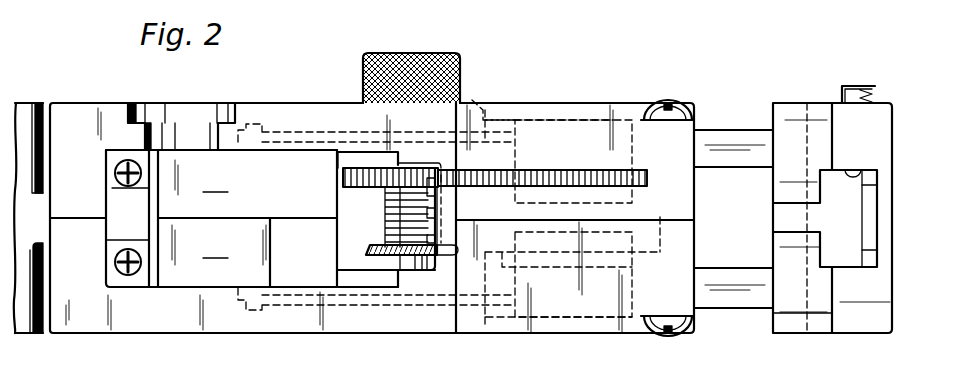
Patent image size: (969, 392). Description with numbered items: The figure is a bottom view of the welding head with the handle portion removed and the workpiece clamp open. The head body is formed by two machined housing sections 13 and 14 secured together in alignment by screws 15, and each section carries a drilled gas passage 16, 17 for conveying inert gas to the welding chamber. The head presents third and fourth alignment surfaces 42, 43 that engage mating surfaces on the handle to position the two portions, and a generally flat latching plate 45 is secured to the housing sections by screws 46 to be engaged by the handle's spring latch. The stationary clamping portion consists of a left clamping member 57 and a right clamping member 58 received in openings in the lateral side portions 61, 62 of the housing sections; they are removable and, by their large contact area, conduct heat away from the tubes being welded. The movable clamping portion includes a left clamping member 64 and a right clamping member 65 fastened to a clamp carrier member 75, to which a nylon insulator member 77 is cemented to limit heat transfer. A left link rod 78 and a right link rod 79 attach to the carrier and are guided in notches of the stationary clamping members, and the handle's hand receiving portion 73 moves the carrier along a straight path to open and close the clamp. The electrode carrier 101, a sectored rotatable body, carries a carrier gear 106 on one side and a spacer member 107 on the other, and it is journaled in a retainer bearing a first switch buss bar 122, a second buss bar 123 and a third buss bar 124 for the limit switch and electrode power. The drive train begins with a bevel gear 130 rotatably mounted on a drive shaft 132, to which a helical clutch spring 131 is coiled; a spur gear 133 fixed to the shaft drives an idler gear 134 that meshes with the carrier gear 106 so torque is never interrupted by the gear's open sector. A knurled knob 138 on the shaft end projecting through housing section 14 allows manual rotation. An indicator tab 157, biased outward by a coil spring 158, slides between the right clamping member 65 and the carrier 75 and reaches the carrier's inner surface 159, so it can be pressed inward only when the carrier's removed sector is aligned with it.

The housing section 13 is at (70, 325).
The housing section 14 is at (85, 113).
The screws 15 is at (665, 333).
The gas passage 16 is at (300, 315).
The gas passage 17 is at (295, 128).
The third alignment surface 42 is at (221, 218).
The fourth alignment surface 43 is at (366, 275).
The latching plate 45 is at (140, 225).
The screws 46 is at (130, 276).
The left clamping member 57 is at (485, 327).
The right clamping member 58 is at (483, 110).
The lateral side portion 61 is at (380, 334).
The lateral side portion 62 is at (333, 103).
The left clamping member 64 is at (787, 334).
The right clamping member 65 is at (816, 116).
The hand receiving portion 73 is at (25, 115).
The clamp carrier member 75 is at (865, 326).
The nylon insulator member 77 is at (868, 199).
The left link rod 78 is at (733, 300).
The right link rod 79 is at (733, 130).
The electrode carrier 101 is at (655, 185).
The carrier gear 106 is at (640, 180).
The spacer member 107 is at (645, 262).
The first switch buss bar 122 is at (440, 246).
The second buss bar 123 is at (437, 212).
The third buss bar 124 is at (444, 165).
The bevel gear 130 is at (366, 250).
The helical clutch spring 131 is at (385, 220).
The drive shaft 132 is at (410, 266).
The spur gear 133 is at (343, 178).
The idler gear 134 is at (527, 172).
The knurled knob 138 is at (428, 55).
The indicator tab 157 is at (848, 85).
The coil spring 158 is at (859, 120).
The inner surface 159 is at (862, 165).